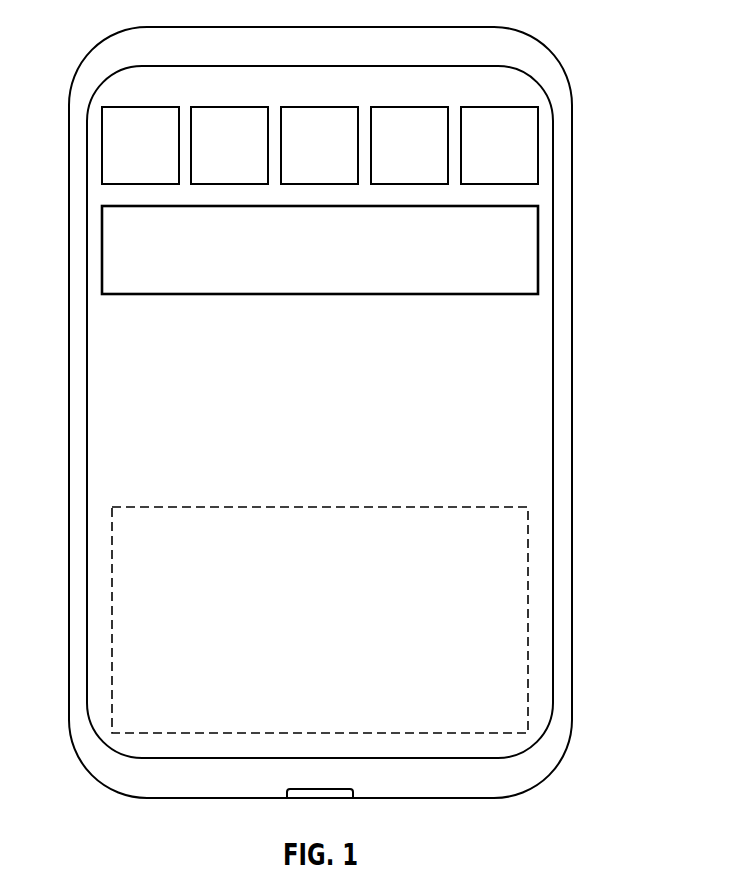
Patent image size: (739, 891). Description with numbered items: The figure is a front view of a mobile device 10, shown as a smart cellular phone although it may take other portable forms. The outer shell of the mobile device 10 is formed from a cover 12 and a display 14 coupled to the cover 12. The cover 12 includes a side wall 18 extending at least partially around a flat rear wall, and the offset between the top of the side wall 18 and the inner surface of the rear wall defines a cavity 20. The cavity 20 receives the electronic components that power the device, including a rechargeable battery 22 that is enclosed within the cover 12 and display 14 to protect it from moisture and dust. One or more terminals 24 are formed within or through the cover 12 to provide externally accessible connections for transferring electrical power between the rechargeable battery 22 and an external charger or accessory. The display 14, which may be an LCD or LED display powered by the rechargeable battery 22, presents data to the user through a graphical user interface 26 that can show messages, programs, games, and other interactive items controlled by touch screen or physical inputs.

The mobile device 10 is at (562, 36).
The cover 12 is at (89, 58).
The display 14 is at (528, 348).
The side wall 18 is at (573, 442).
The cavity 20 is at (508, 665).
The rechargeable battery 22 is at (133, 653).
The terminals 24 is at (318, 800).
The graphical user interface 26 is at (133, 417).